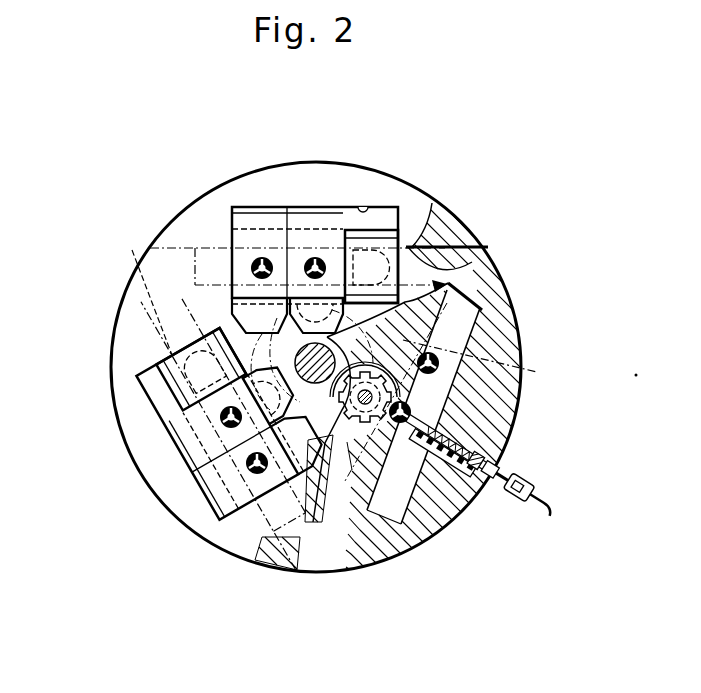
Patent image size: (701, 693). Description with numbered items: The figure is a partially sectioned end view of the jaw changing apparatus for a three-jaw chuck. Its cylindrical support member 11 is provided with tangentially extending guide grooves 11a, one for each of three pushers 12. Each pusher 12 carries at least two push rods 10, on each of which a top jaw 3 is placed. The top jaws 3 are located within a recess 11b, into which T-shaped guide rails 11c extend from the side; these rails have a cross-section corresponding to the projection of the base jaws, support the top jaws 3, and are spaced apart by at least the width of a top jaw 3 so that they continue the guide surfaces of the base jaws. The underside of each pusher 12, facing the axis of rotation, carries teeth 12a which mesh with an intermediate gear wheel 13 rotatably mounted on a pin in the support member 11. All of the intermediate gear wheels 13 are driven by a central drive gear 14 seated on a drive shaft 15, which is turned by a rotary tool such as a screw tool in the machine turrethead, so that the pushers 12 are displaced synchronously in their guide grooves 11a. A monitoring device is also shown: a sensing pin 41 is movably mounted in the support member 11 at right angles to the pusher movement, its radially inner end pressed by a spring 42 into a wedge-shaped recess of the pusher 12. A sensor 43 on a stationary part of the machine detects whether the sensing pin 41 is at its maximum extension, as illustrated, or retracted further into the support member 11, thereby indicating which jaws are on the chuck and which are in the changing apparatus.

The top jaw 3 is at (252, 220).
The push rods 10 is at (308, 258).
The cylindrical support member 11 is at (497, 303).
The guide grooves 11a is at (185, 295).
The recess 11b is at (367, 205).
The guide rails 11c is at (375, 243).
The pusher 12 is at (453, 322).
The teeth 12a is at (491, 366).
The intermediate gear wheel 13 is at (445, 490).
The central drive gear 14 is at (362, 400).
The drive shaft 15 is at (316, 385).
The sensing pin 41 is at (502, 482).
The spring 42 is at (477, 443).
The sensor 43 is at (540, 503).